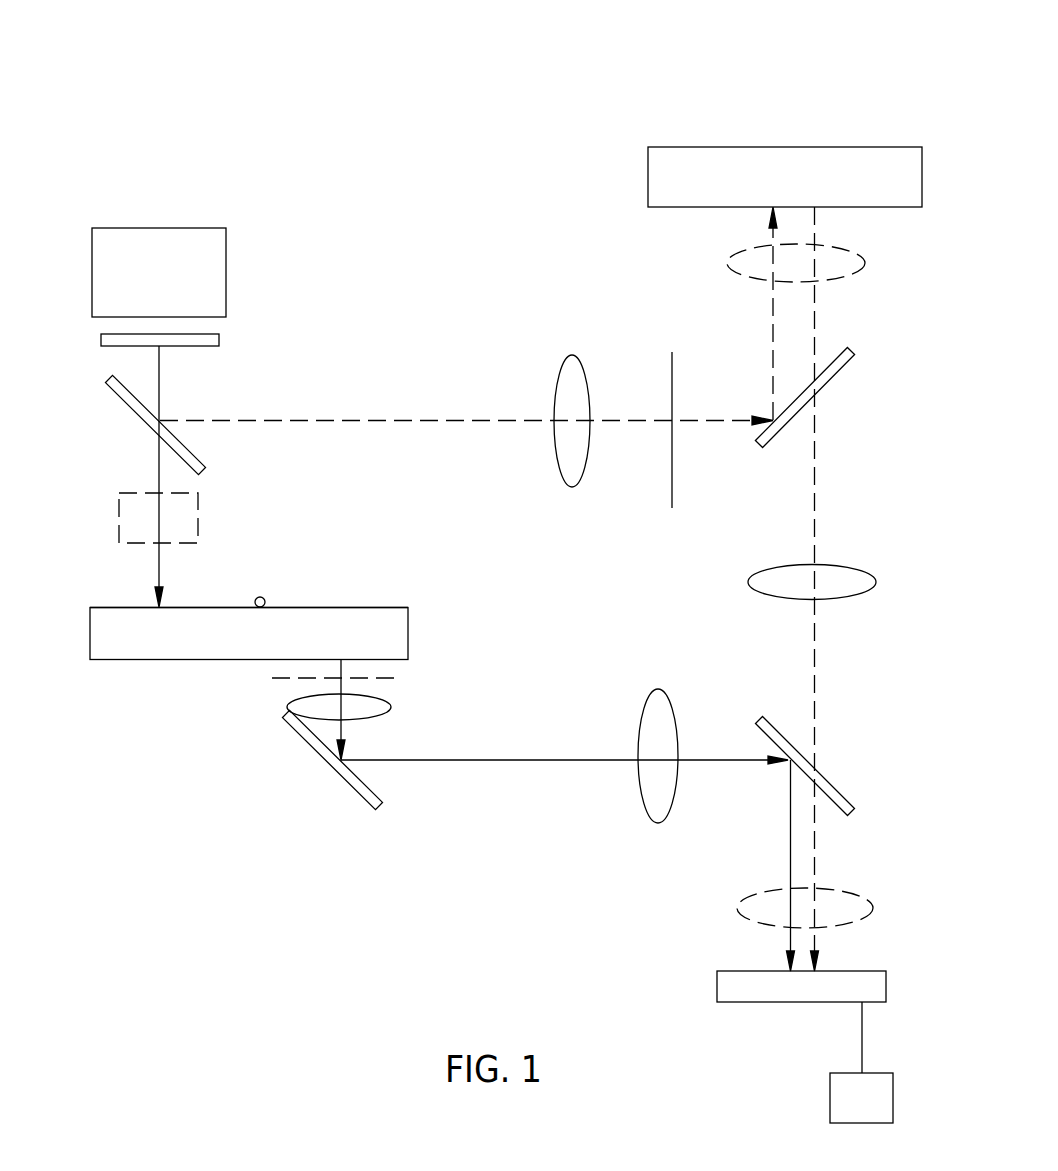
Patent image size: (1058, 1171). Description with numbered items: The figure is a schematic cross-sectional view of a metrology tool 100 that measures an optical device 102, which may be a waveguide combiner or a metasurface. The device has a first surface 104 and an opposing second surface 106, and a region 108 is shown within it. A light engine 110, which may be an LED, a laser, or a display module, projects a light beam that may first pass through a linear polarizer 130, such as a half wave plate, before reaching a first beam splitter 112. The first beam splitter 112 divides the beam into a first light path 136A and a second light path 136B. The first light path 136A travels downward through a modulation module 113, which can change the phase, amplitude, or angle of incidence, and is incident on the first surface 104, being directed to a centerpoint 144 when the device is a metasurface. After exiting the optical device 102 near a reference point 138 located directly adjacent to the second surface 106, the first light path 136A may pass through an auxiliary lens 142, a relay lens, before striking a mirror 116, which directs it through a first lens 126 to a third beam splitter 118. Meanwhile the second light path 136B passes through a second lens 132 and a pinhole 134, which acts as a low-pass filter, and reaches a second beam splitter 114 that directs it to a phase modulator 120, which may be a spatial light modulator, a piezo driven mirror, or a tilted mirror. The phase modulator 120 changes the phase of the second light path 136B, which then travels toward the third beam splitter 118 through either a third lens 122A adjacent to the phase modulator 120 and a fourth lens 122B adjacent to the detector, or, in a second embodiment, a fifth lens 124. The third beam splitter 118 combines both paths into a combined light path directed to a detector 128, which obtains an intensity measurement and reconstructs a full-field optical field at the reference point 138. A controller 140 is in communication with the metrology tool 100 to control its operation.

The metrology tool 100 is at (810, 54).
The optical device 102 is at (432, 600).
The first surface 104 is at (315, 606).
The second surface 106 is at (148, 660).
The sample 108 is at (270, 647).
The light engine 110 is at (180, 290).
The first beam splitter 112 is at (127, 408).
The modulation module 113 is at (119, 508).
The second beam splitter 114 is at (829, 380).
The mirror 116 is at (325, 763).
The third beam splitter 118 is at (830, 776).
The phase modulator 120 is at (791, 147).
The third lens 122A is at (853, 250).
The fourth lens 122B is at (863, 897).
The fifth lens 124 is at (860, 568).
The first lens 126 is at (658, 689).
The detector 128 is at (777, 1002).
The linear polarizer 130 is at (219, 340).
The second lens 132 is at (572, 355).
The pinhole 134 is at (672, 352).
The first light path 136A is at (205, 561).
The second light path 136B is at (385, 383).
The reference point 138 is at (397, 678).
The controller 140 is at (882, 1111).
The auxiliary lens 142 is at (392, 705).
The centerpoint 144 is at (263, 597).